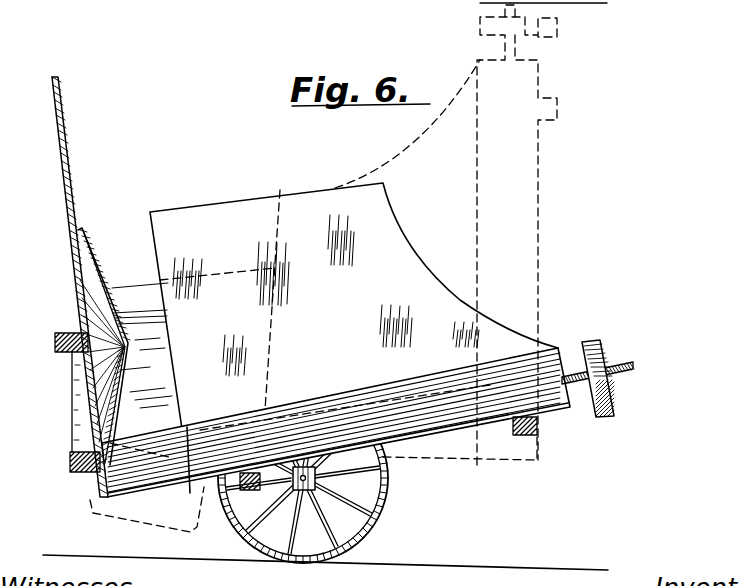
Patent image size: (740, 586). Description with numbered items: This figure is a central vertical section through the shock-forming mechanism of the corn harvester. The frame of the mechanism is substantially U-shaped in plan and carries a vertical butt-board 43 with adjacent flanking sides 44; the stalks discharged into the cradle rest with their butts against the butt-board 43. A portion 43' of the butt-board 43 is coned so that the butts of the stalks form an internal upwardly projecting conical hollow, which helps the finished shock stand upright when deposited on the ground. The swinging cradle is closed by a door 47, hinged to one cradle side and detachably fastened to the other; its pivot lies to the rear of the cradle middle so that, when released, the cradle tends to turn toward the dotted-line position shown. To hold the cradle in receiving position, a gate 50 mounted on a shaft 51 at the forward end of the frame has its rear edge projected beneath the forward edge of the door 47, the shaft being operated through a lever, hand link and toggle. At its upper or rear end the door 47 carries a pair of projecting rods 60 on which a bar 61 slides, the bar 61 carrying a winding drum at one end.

The butt-board 43 is at (103, 287).
The coned portion of butt-board 43' is at (154, 346).
The flanking side 44 is at (262, 207).
The door 47 is at (552, 417).
The gate 50 is at (160, 503).
The shaft 51 is at (90, 477).
The projecting rod 60 is at (633, 363).
The bar 61 is at (617, 403).